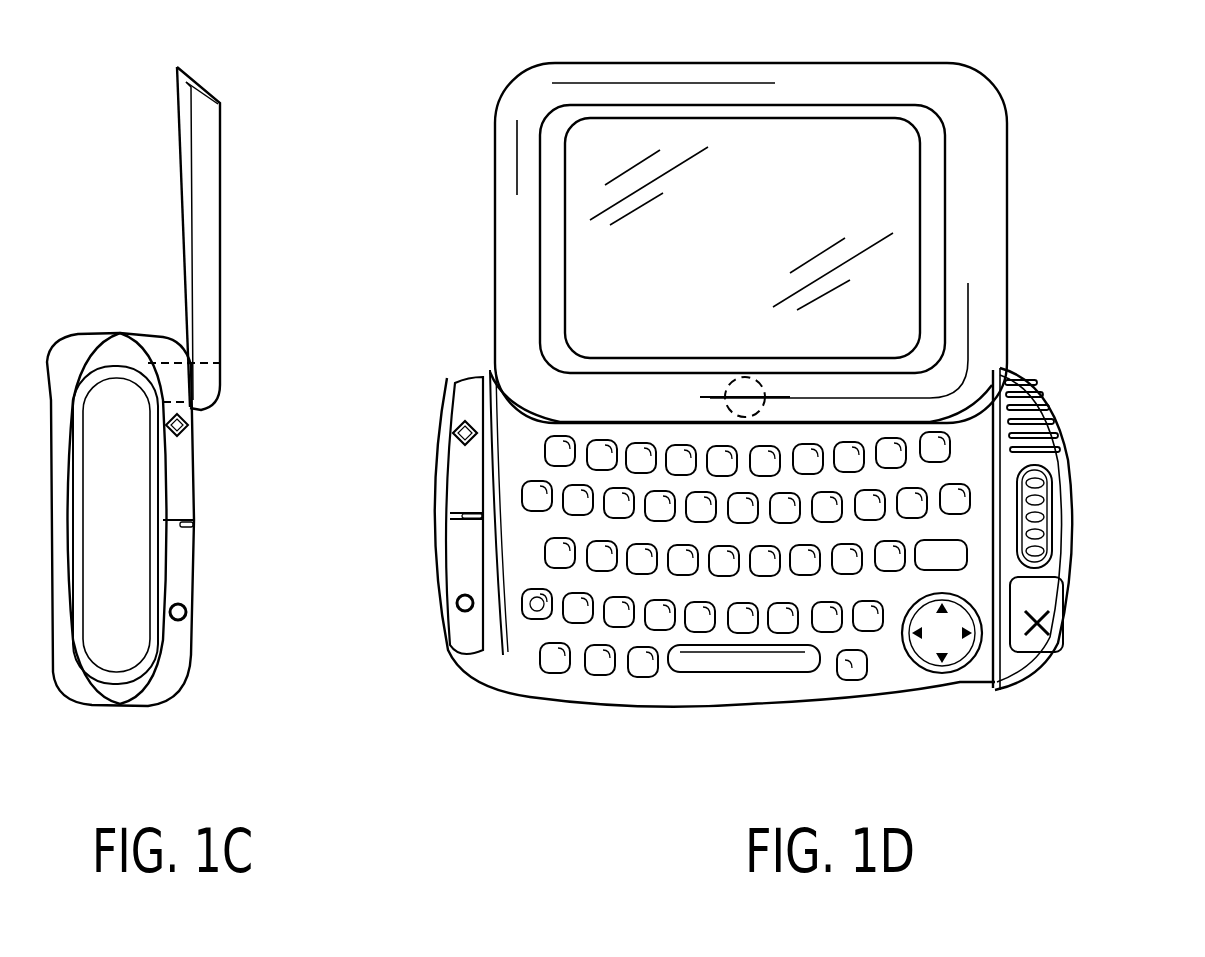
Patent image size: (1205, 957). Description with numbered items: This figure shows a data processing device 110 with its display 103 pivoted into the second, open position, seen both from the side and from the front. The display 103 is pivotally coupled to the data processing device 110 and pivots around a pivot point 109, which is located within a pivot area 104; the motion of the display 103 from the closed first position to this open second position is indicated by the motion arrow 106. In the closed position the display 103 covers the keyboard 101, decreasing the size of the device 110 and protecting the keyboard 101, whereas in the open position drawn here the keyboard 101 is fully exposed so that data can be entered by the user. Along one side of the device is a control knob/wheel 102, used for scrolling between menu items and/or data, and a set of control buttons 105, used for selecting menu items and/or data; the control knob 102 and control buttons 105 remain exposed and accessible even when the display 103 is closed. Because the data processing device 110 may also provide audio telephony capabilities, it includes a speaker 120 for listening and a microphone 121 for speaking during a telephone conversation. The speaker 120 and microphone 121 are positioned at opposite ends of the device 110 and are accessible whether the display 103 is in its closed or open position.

In FIG. 1D, the keyboard 101 is at (767, 662).
In FIG. 1D, the control knob/wheel 102 is at (1040, 512).
In FIG. 1C, the display 103 is at (210, 103).
In FIG. 1D, the display 103 is at (997, 200).
In FIG. 1C, the pivot area 104 is at (200, 371).
In FIG. 1D, the pivot area 104 is at (757, 384).
In FIG. 1C, the control buttons 105 is at (183, 483).
In FIG. 1D, the control buttons 105 is at (458, 398).
In FIG. 1D, the motion arrow 106 is at (418, 510).
In FIG. 1D, the pivot point 109 is at (746, 391).
In FIG. 1C, the data processing device 110 is at (457, 728).
In FIG. 1D, the speaker 120 is at (1057, 407).
In FIG. 1D, the microphone 121 is at (483, 515).